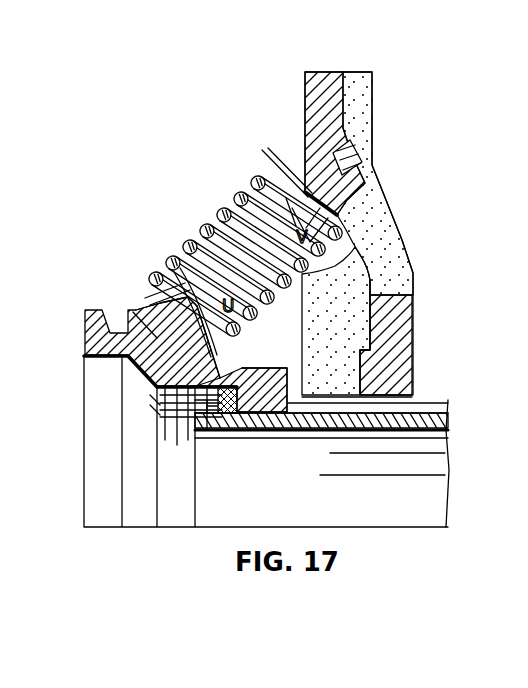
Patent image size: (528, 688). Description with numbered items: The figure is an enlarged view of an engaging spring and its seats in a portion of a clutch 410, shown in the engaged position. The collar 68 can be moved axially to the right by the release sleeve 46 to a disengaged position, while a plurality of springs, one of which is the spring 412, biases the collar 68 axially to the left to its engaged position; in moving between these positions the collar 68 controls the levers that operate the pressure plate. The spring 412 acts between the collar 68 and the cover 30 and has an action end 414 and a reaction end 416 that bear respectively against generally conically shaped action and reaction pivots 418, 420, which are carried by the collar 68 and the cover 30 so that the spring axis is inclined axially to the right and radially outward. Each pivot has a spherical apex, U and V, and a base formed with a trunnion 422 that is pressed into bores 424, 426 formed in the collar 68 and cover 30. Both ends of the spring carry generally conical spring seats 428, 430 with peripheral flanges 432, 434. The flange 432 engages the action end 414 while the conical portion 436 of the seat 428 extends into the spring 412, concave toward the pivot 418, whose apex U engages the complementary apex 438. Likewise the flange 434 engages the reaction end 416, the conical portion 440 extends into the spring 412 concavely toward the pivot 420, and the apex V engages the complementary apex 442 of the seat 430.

The cover 30 is at (318, 78).
The release sleeve 46 is at (440, 413).
The collar 68 is at (96, 345).
The clutch 410 is at (408, 178).
The spring 412 is at (212, 227).
The action end 414 is at (160, 289).
The reaction end 416 is at (299, 187).
The action pivot 418 is at (174, 305).
The reaction pivot 420 is at (336, 210).
The trunnion 422 is at (140, 367).
The bore 424 is at (127, 360).
The bore 426 is at (356, 148).
The spring seat 428 is at (177, 277).
The spring seat 430 is at (270, 194).
The peripheral flange 432 is at (218, 354).
The peripheral flange 434 is at (360, 243).
The conical portion 436 is at (237, 337).
The apex 438 is at (204, 262).
The conical portion 440 is at (362, 259).
The apex 442 is at (250, 210).